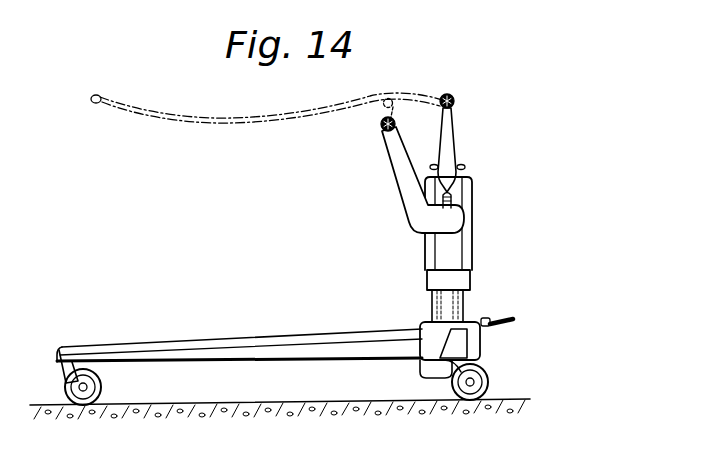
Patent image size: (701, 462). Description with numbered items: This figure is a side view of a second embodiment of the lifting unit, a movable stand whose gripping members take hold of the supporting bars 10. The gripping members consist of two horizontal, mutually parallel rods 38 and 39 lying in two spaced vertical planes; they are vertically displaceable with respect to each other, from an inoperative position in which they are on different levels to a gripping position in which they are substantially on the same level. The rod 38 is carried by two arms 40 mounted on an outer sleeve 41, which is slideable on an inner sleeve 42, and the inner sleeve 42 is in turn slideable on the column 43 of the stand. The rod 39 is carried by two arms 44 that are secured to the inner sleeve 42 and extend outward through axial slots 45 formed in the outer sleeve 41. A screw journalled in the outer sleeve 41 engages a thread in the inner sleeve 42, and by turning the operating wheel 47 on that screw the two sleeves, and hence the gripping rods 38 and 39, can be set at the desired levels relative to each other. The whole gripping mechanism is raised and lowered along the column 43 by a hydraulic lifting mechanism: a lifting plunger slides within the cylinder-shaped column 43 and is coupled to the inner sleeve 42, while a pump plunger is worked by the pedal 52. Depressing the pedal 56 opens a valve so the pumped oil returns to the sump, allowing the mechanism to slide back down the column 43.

The supporting bars 10 is at (234, 116).
The rod 38 is at (458, 97).
The rod 39 is at (381, 130).
The arms 40 is at (453, 127).
The outer sleeve 41 is at (470, 232).
The inner sleeve 42 is at (452, 260).
The column 43 is at (466, 300).
The arms 44 is at (395, 166).
The axial slots 45 is at (456, 203).
The operating wheel 47 is at (463, 165).
The pedal 52 is at (507, 325).
The pedal 56 is at (490, 320).